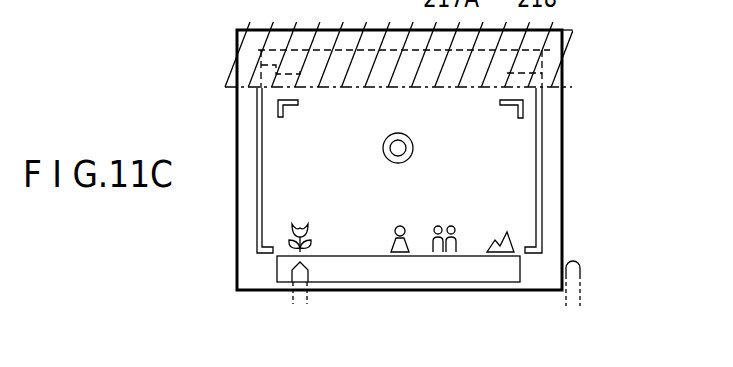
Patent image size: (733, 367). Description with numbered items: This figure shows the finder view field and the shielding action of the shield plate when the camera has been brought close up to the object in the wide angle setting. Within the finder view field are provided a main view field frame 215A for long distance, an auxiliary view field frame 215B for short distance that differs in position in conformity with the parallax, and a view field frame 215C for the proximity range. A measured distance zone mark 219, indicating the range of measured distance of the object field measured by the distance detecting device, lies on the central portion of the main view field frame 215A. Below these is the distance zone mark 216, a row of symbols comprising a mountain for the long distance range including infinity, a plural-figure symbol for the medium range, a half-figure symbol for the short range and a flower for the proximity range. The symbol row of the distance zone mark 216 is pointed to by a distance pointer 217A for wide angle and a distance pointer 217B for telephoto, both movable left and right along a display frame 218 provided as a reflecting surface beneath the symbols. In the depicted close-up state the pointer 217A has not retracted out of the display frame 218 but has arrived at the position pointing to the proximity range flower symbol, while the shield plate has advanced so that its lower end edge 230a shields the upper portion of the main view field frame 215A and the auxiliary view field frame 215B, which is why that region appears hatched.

The main view field frame 215A is at (272, 47).
The auxiliary view field frame 215B is at (258, 57).
The lower end edge 230a is at (258, 70).
The view field frame for proximity range 215C is at (522, 104).
The measured distance zone mark 219 is at (414, 147).
The distance zone mark 216 is at (515, 222).
The display frame 218 is at (404, 272).
The distance pointer for wide angle 217A is at (307, 292).
The distance pointer for telephoto 217B is at (580, 273).